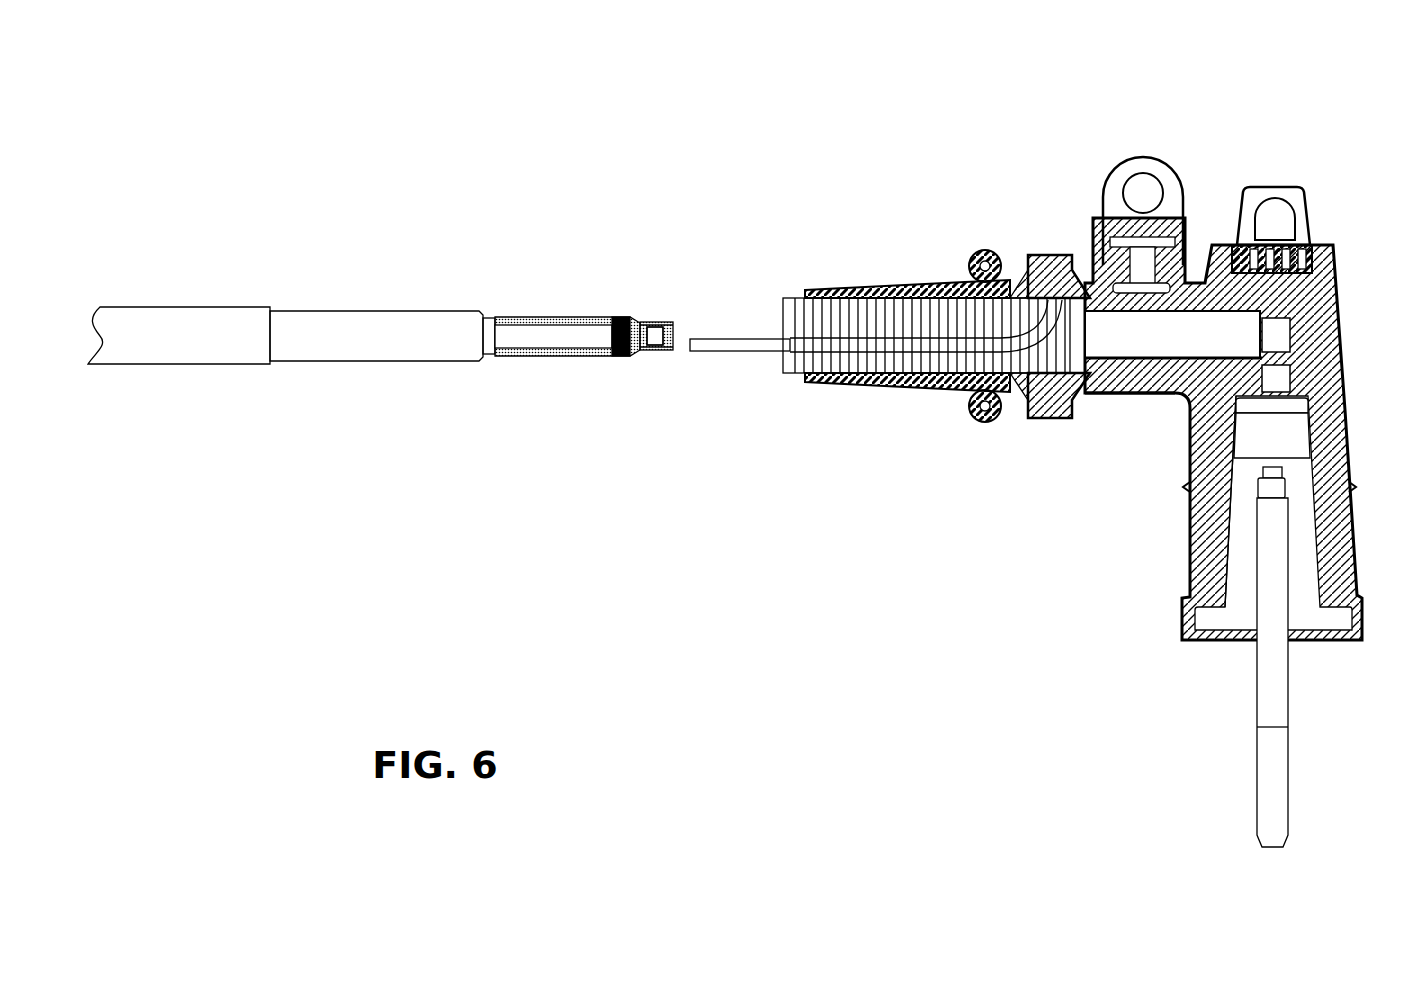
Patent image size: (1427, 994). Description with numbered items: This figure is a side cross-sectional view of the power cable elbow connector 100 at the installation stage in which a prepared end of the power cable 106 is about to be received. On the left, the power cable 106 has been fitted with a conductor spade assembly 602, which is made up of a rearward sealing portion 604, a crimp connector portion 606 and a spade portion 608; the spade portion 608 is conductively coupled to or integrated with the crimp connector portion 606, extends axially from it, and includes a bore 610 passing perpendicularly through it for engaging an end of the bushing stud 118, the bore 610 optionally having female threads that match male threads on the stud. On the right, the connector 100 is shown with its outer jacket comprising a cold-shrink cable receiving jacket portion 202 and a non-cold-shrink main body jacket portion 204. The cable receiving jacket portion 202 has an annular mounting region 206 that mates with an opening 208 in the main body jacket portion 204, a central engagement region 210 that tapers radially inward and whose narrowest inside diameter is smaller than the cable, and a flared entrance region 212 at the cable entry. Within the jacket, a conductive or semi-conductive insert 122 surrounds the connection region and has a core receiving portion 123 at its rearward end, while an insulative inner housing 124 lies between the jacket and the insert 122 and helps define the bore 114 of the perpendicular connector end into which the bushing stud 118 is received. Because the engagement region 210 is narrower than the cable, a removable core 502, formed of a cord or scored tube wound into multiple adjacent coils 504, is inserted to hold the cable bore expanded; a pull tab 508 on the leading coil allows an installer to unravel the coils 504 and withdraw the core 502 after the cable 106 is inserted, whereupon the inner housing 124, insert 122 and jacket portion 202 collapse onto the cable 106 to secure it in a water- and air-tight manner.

The power cable elbow connector 100 is at (1067, 170).
The power cable 106 is at (260, 262).
The bore 114 is at (1243, 582).
The bushing stud 118 is at (1277, 652).
The insert 122 is at (1340, 364).
The core receiving portion 123 is at (1082, 396).
The insulative inner housing 124 is at (1210, 537).
The cable receiving jacket portion 202 is at (960, 265).
The main body jacket portion 204 is at (1175, 440).
The annular mounting region 206 is at (1047, 262).
The opening 208 is at (1057, 415).
The central engagement region 210 is at (890, 386).
The flared entrance region 212 is at (822, 292).
The removable core 502 is at (857, 365).
The coils 504 is at (1002, 362).
The pull tab 508 is at (752, 350).
The conductor spade assembly 602 is at (486, 376).
The rearward sealing portion 604 is at (376, 336).
The crimp connector portion 606 is at (582, 320).
The spade portion 608 is at (668, 352).
The bore 610 is at (657, 333).